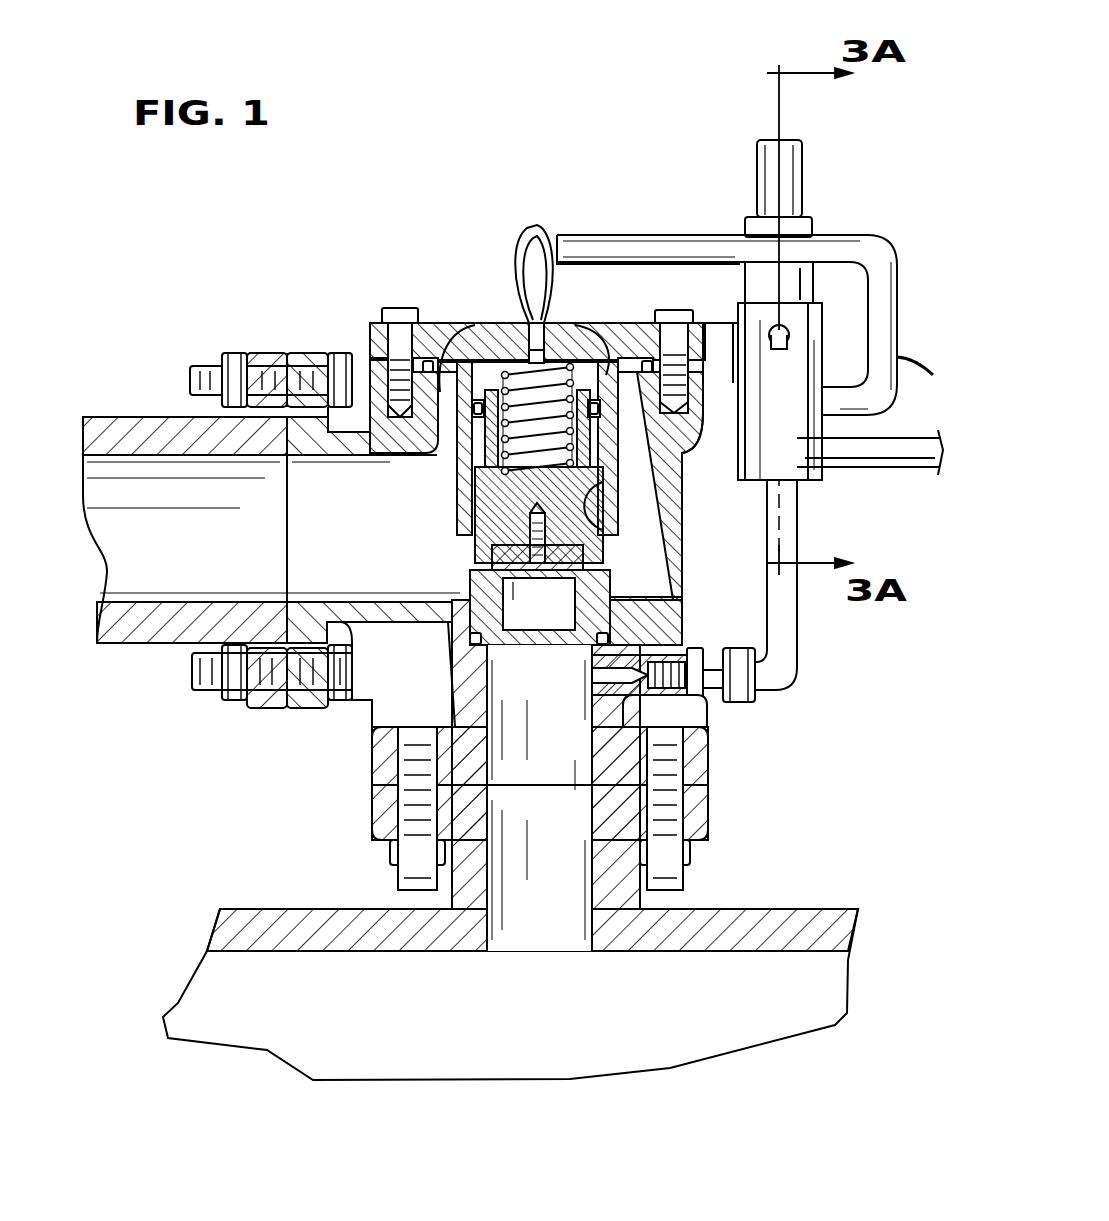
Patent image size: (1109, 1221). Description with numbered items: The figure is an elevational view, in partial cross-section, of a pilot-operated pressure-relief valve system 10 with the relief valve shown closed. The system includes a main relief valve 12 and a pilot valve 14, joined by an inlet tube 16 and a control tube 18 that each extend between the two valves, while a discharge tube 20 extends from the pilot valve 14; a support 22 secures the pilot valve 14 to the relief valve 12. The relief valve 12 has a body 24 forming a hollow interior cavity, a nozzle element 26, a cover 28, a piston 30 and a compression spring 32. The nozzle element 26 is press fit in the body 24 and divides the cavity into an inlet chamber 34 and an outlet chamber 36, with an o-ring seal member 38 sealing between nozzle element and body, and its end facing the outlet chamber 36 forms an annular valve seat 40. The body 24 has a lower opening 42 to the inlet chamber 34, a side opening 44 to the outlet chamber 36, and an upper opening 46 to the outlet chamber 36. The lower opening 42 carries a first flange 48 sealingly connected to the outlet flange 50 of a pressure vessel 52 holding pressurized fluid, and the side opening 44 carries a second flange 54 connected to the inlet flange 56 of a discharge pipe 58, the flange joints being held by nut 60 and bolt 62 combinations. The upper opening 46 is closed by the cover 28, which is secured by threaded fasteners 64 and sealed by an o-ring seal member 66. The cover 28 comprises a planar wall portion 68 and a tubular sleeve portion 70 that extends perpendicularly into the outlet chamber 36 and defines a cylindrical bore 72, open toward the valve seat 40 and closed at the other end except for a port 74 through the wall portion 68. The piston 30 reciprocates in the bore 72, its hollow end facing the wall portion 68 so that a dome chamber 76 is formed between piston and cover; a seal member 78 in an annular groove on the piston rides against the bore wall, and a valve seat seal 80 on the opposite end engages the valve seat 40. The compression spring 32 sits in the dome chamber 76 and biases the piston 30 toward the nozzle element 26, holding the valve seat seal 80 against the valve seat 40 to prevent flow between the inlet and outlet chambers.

The pilot-operated pressure-relief valve system 10 is at (392, 183).
The relief valve 12 is at (686, 483).
The pilot valve 14 is at (815, 215).
The inlet tube 16 is at (797, 628).
The control tube 18 is at (897, 335).
The discharge tube 20 is at (865, 468).
The support 22 is at (700, 262).
The body 24 is at (690, 528).
The nozzle element 26 is at (617, 582).
The cover 28 is at (462, 320).
The piston 30 is at (465, 553).
The compression spring 32 is at (492, 383).
The inlet chamber 34 is at (539, 798).
The outlet chamber 36 is at (325, 530).
The seal member 38 is at (608, 638).
The valve seat 40 is at (472, 580).
The lower opening 42 is at (548, 786).
The side opening 44 is at (286, 540).
The upper opening 46 is at (483, 338).
The first flange 48 is at (710, 754).
The outlet flange 50 is at (710, 810).
The pressure vessel 52 is at (792, 908).
The second flange 54 is at (300, 708).
The inlet flange 56 is at (272, 708).
The discharge pipe 58 is at (157, 645).
The nut 60 is at (225, 365).
The bolt 62 is at (332, 365).
The threaded fasteners 64 is at (400, 308).
The seal member 66 is at (683, 430).
The wall portion 68 is at (440, 320).
The sleeve portion 70 is at (460, 468).
The bore 72 is at (603, 536).
The port 74 is at (546, 322).
The dome chamber 76 is at (508, 340).
The seal member 78 is at (600, 408).
The valve seat seal 80 is at (568, 574).